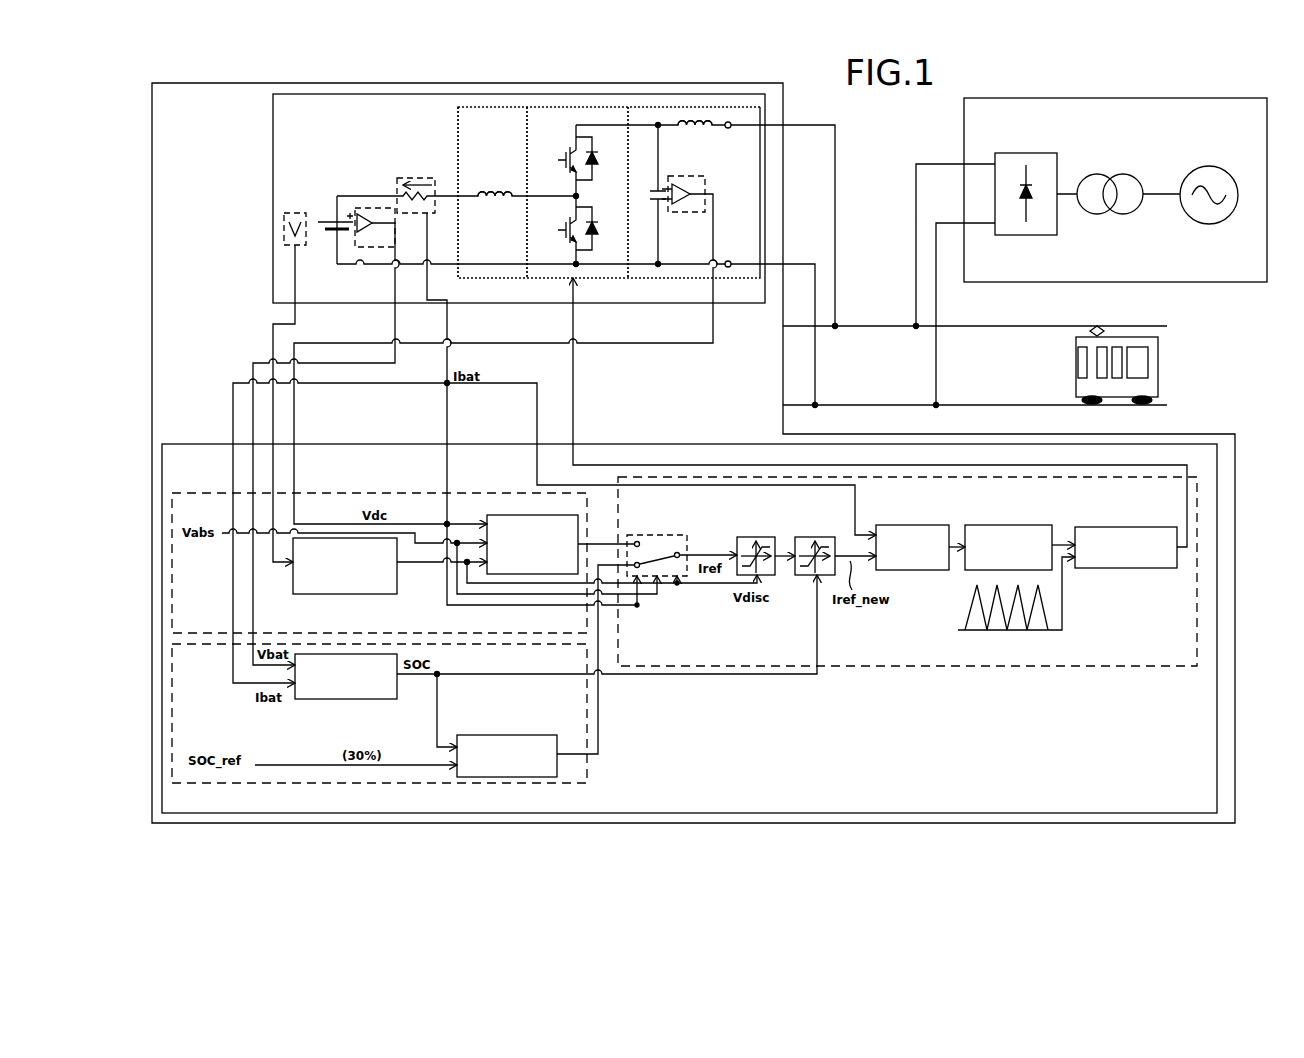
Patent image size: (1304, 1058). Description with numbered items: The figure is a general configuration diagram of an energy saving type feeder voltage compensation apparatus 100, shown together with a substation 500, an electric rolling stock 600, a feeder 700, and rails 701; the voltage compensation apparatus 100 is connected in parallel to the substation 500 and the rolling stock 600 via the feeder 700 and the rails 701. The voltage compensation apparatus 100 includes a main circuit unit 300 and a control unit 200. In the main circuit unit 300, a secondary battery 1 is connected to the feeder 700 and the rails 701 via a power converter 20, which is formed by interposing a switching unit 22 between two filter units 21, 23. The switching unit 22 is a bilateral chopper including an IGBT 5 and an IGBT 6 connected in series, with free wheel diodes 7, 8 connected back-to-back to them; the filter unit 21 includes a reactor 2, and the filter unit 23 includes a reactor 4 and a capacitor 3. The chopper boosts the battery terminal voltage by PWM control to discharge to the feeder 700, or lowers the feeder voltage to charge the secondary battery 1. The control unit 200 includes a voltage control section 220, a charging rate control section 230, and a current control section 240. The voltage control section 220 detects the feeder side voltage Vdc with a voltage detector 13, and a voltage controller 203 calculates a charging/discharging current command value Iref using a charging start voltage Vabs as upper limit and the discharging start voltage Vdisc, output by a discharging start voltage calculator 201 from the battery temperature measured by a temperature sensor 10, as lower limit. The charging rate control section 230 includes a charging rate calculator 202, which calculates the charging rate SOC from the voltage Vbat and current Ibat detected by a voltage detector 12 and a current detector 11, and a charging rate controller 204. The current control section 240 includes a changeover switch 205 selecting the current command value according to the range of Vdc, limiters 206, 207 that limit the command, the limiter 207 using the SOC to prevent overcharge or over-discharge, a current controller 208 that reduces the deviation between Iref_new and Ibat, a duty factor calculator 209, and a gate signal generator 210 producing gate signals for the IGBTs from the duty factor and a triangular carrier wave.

The secondary battery 1 is at (342, 213).
The reactor 2 is at (495, 193).
The capacitor 3 is at (656, 205).
The reactor 4 is at (694, 132).
The IGBT 5 is at (563, 160).
The IGBT 6 is at (563, 232).
The free wheel diode 7 is at (598, 156).
The free wheel diode 8 is at (598, 228).
The temperature sensor 10 is at (297, 213).
The current detector 11 is at (419, 178).
The voltage detector 12 is at (361, 248).
The voltage detector 13 is at (690, 214).
The power converter 20 is at (605, 281).
The filter unit 21 is at (483, 281).
The switching unit 22 is at (543, 281).
The filter unit 23 is at (680, 281).
The energy saving type feeder voltage compensation apparatus 100 is at (805, 823).
The control unit 200 is at (380, 444).
The discharging start voltage calculator 201 is at (300, 594).
The charging rate calculator 202 is at (308, 699).
The voltage controller 203 is at (503, 575).
The charging rate controller 204 is at (518, 735).
The changeover switch 205 is at (652, 535).
The limiter 206 is at (758, 537).
The limiter 207 is at (817, 537).
The current controller 208 is at (918, 525).
The duty factor calculator 209 is at (1008, 525).
The gate signal generator 210 is at (1117, 527).
The voltage control section 220 is at (390, 493).
The charging rate control section 230 is at (297, 784).
The current control section 240 is at (863, 666).
The main circuit unit 300 is at (273, 197).
The substation 500 is at (1028, 98).
The electric rolling stock 600 is at (1160, 346).
The feeder 700 is at (881, 325).
The rails 701 is at (880, 404).